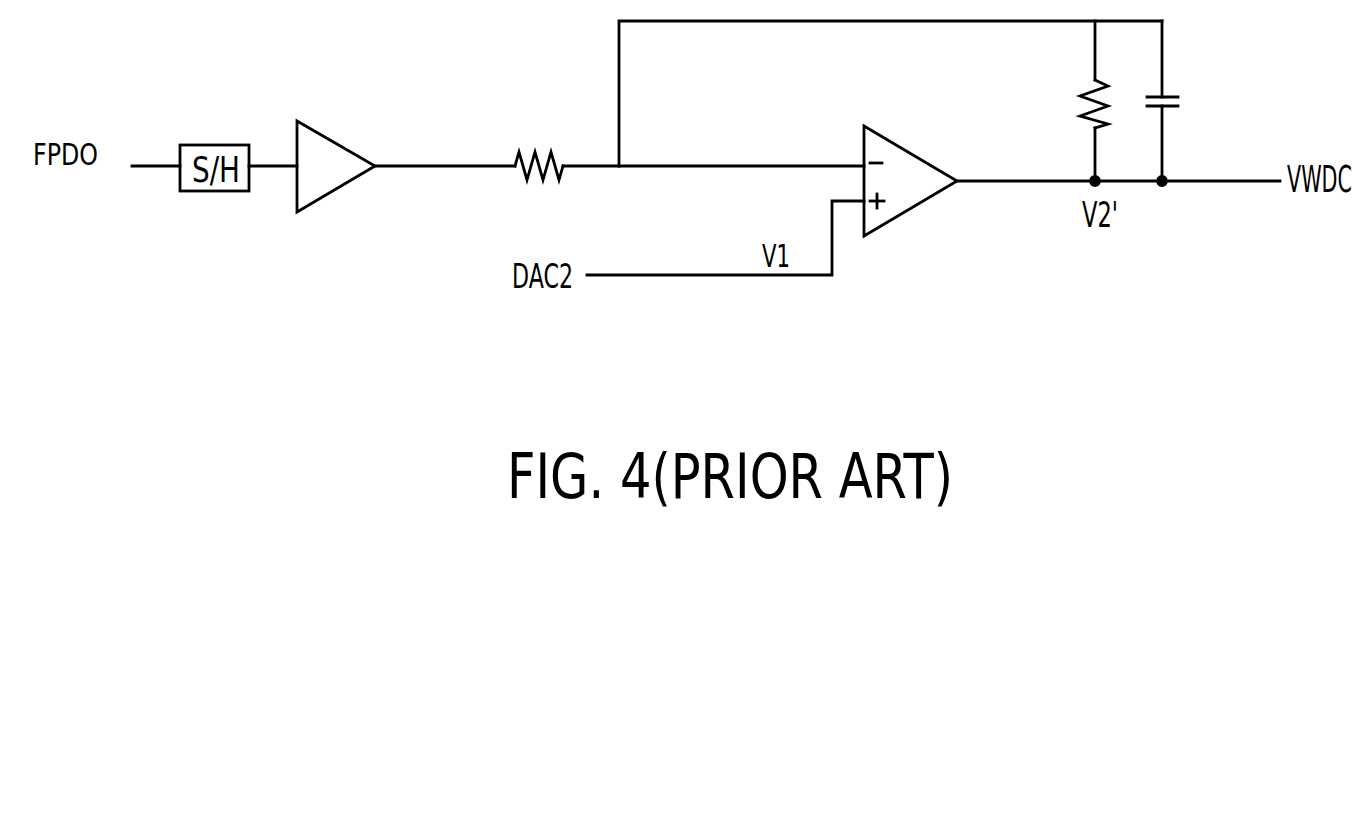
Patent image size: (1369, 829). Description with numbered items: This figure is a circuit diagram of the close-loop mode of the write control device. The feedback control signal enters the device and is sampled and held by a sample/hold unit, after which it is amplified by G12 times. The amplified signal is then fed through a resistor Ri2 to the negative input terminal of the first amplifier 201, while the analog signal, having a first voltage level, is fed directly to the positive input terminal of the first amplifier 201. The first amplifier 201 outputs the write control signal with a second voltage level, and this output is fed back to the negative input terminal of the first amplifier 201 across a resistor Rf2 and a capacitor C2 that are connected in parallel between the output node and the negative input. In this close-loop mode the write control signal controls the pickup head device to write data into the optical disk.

The first amplifier 201 is at (910, 208).
The gain G12 is at (336, 166).
The resistor Ri2 is at (536, 139).
The resistor Rf2 is at (1062, 101).
The capacitor C2 is at (1183, 101).